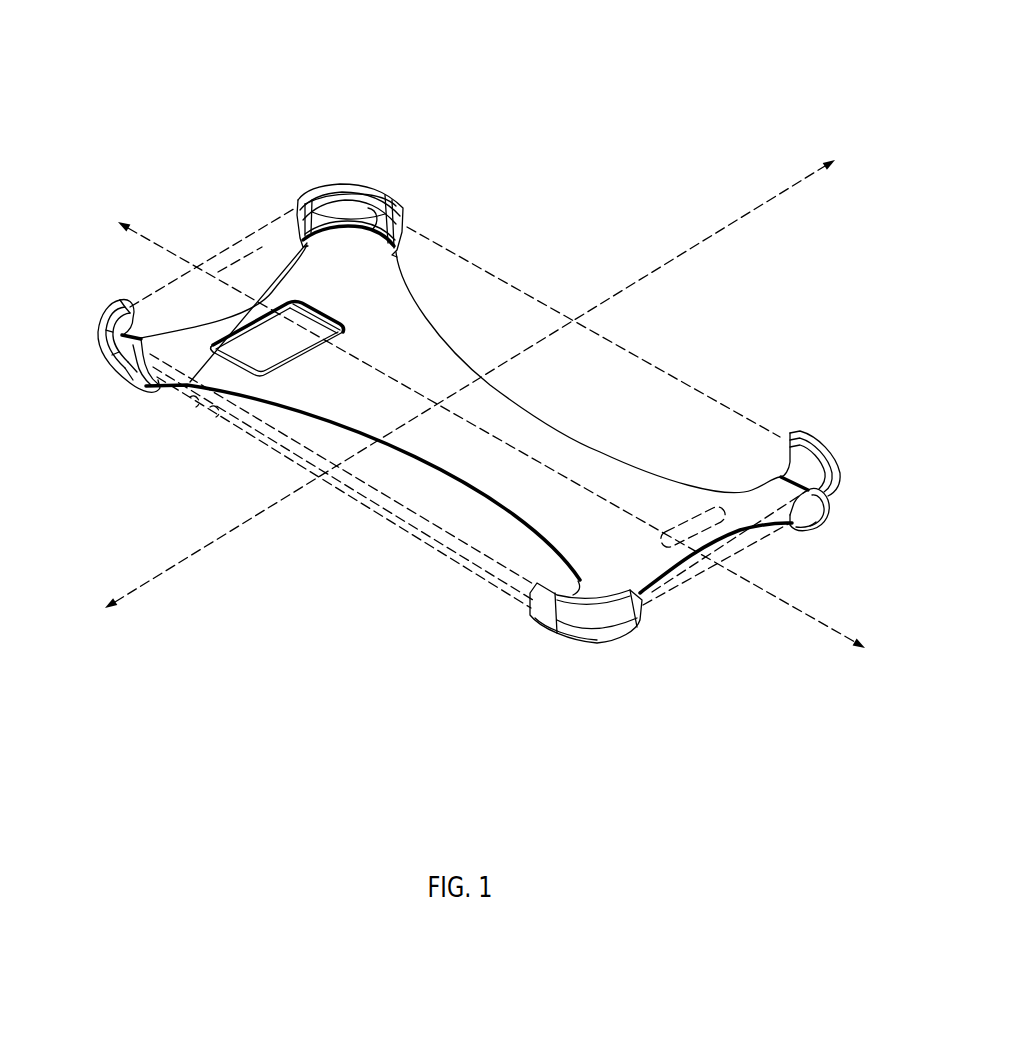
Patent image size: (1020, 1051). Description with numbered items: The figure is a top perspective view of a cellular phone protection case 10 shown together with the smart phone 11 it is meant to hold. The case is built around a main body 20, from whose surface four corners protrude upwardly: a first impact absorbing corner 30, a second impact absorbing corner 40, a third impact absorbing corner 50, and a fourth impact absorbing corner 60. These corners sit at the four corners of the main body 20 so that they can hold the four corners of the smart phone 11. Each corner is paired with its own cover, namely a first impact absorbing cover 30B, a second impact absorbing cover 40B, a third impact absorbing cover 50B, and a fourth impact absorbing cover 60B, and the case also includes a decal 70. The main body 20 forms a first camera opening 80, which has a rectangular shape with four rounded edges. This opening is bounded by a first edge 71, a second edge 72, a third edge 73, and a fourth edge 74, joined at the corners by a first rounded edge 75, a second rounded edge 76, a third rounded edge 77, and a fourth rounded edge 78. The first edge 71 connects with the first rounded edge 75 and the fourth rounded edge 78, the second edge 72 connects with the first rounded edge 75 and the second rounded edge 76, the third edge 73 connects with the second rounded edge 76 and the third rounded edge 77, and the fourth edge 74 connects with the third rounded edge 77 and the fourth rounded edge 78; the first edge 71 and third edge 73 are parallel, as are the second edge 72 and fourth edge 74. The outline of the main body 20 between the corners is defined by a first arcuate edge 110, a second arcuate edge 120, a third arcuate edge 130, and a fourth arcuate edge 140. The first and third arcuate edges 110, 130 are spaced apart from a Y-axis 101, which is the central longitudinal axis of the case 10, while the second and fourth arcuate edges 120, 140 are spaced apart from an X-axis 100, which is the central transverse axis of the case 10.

The cellular phone protection case 10 is at (620, 140).
The smart phone 11 is at (512, 275).
The main body 20 is at (538, 450).
The first impact absorbing corner 30 is at (123, 300).
The first impact absorbing cover 30B is at (107, 353).
The second impact absorbing corner 40 is at (380, 222).
The second impact absorbing cover 40B is at (348, 184).
The third impact absorbing corner 50 is at (557, 583).
The third impact absorbing cover 50B is at (588, 643).
The fourth impact absorbing corner 60 is at (790, 462).
The fourth impact absorbing cover 60B is at (836, 500).
The decal 70 is at (460, 481).
The first edge 71 is at (190, 382).
The second edge 72 is at (327, 340).
The third edge 73 is at (307, 303).
The fourth edge 74 is at (257, 343).
The first rounded edge 75 is at (262, 377).
The second rounded edge 76 is at (340, 327).
The third rounded edge 77 is at (288, 303).
The fourth rounded edge 78 is at (210, 347).
The first camera opening 80 is at (262, 342).
The X-axis 100 is at (482, 372).
The Y-axis 101 is at (497, 451).
The first arcuate edge 110 is at (347, 427).
The second arcuate edge 120 is at (660, 580).
The third arcuate edge 130 is at (602, 450).
The fourth arcuate edge 140 is at (165, 306).